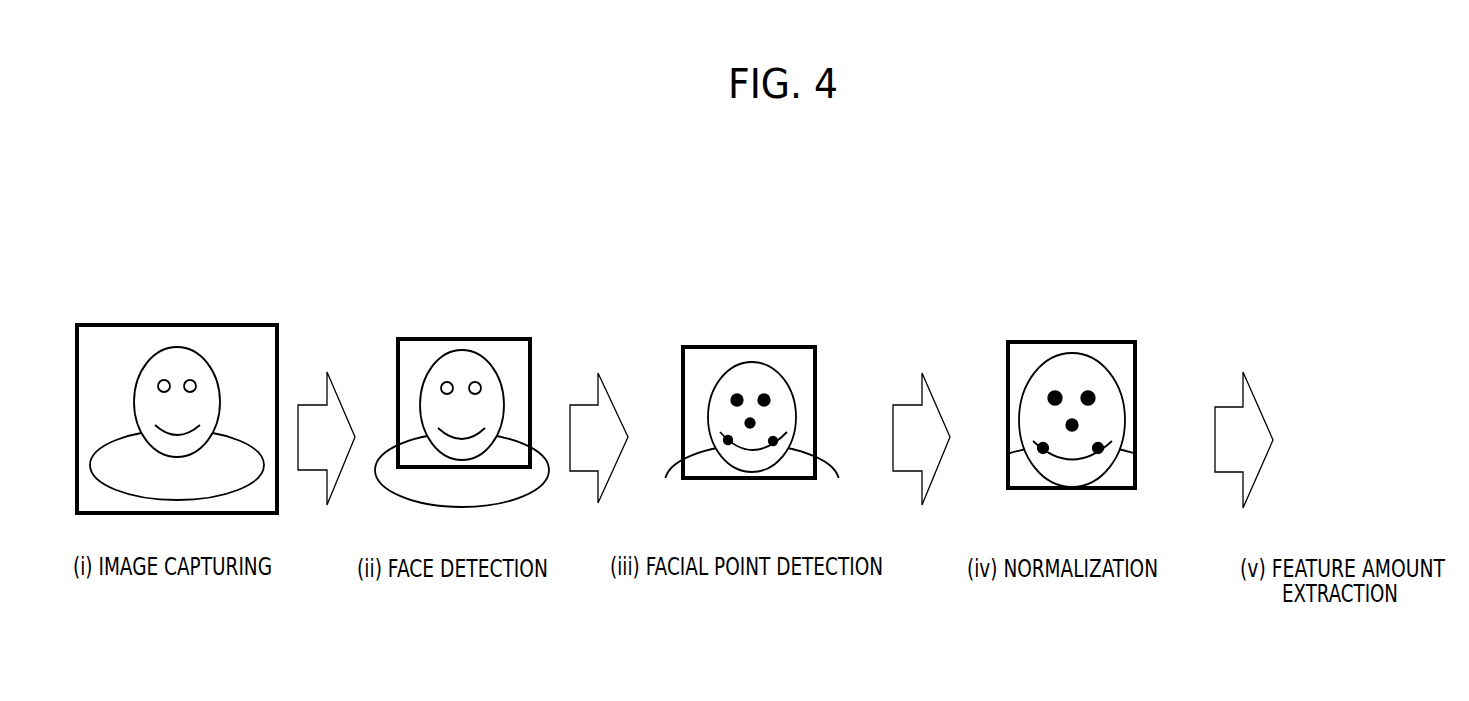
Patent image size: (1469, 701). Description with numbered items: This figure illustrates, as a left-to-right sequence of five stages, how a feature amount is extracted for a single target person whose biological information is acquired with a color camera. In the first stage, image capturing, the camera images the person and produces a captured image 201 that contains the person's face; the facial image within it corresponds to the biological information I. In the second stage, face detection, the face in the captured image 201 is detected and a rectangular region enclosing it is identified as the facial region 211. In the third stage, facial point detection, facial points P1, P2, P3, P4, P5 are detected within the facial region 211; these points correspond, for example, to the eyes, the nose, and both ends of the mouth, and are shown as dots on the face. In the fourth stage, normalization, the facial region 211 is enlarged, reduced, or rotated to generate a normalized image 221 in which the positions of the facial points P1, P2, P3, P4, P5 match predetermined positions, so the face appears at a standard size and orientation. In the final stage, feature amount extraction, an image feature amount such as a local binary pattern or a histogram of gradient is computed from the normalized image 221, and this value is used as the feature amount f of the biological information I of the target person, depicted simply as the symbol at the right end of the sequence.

The captured image 201 is at (118, 337).
The facial region 211 is at (413, 348).
The normalized image 221 is at (1025, 355).
The biological information I is at (184, 350).
The facial point P1 is at (737, 395).
The facial point P2 is at (766, 396).
The facial point P3 is at (752, 422).
The facial point P4 is at (728, 440).
The facial point P5 is at (775, 441).
The feature amount f is at (1368, 442).